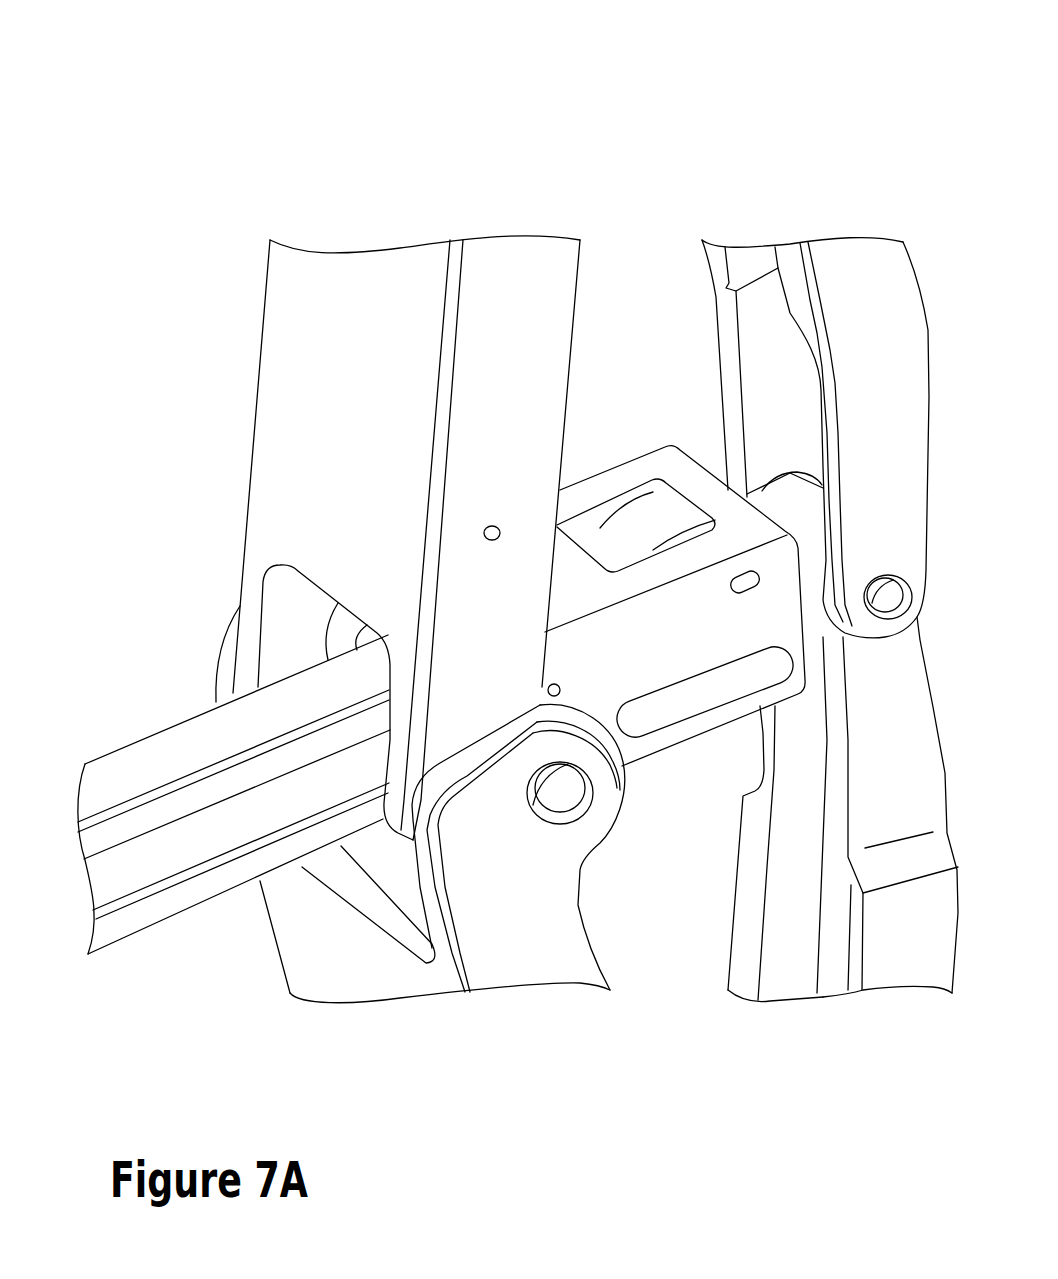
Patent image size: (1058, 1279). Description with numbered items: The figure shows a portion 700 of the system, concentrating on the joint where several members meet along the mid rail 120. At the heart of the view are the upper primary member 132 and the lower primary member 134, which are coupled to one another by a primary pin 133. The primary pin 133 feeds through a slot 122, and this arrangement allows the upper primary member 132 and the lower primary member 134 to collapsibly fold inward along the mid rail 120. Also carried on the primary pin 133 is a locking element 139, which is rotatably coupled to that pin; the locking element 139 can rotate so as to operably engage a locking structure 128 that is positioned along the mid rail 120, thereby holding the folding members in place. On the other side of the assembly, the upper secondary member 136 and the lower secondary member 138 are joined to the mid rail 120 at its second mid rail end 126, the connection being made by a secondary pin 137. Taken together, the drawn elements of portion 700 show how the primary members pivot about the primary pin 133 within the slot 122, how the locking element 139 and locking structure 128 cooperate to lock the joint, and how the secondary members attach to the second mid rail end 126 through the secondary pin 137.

The portion 700 is at (855, 92).
The mid rail 120 is at (140, 740).
The slot 122 is at (219, 831).
The second mid rail end 126 is at (310, 668).
The locking structure 128 is at (658, 513).
The upper primary member 132 is at (260, 363).
The primary pin 133 is at (560, 807).
The lower primary member 134 is at (283, 963).
The upper secondary member 136 is at (717, 373).
The secondary pin 137 is at (870, 613).
The lower secondary member 138 is at (737, 895).
The locking element 139 is at (655, 453).